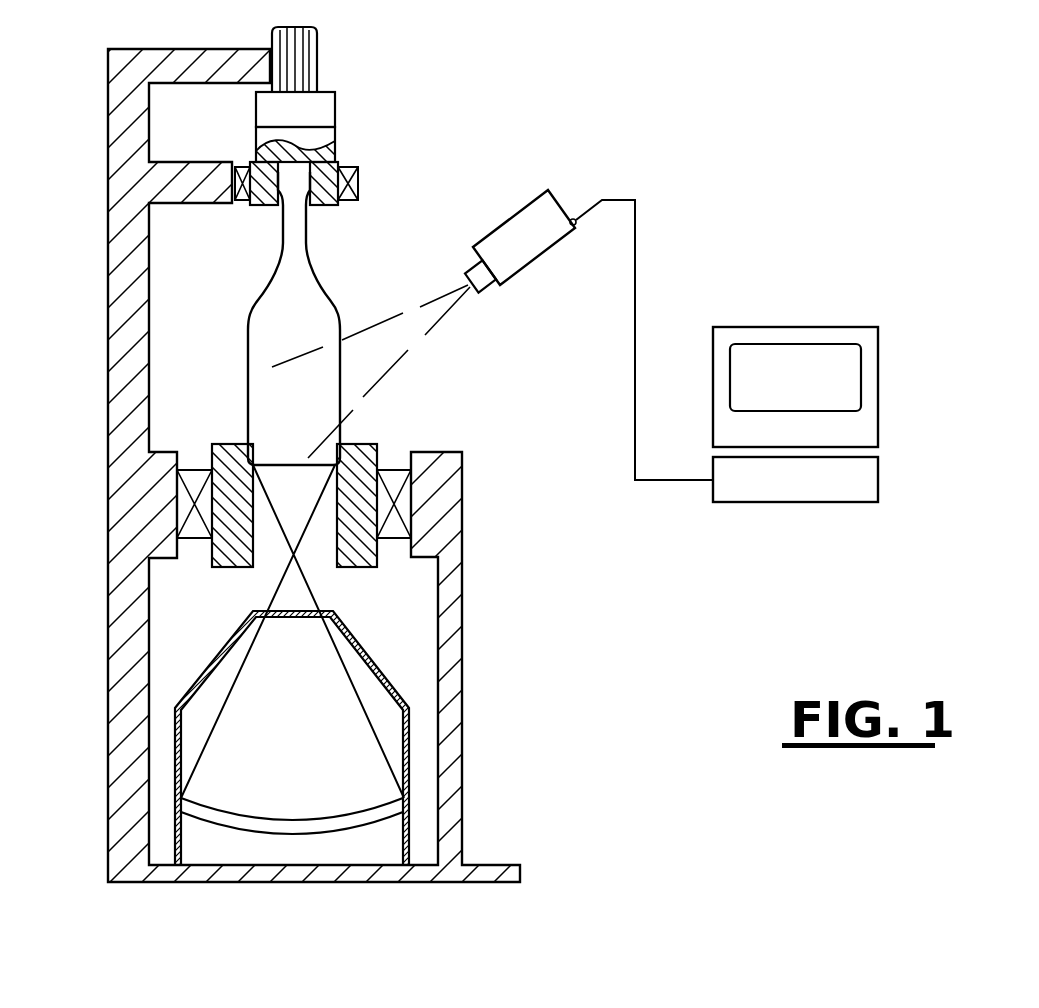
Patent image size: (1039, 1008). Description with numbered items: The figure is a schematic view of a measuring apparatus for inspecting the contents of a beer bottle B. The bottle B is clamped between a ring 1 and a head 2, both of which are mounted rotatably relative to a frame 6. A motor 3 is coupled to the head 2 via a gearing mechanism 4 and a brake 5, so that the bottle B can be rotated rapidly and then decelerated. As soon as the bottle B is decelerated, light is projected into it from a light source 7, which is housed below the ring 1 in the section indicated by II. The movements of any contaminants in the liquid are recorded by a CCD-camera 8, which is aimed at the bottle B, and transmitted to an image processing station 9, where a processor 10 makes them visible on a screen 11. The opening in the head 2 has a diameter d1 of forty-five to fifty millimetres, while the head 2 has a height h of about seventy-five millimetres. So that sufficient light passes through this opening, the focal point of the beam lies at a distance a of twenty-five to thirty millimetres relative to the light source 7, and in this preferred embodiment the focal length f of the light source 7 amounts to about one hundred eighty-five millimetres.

The ring 1 is at (365, 443).
The head 2 is at (326, 205).
The motor 3 is at (305, 38).
The gearing mechanism 4 is at (312, 100).
The brake 5 is at (315, 131).
The frame 6 is at (117, 165).
The light source 7 is at (333, 819).
The CCD-camera 8 is at (523, 222).
The image processing station 9 is at (862, 415).
The processor 10 is at (810, 492).
The screen 11 is at (820, 332).
The beer bottle B is at (328, 290).
The illumination housing II is at (395, 658).
The diameter of the head opening d1 is at (337, 502).
The height of the head h is at (354, 447).
The distance of the focal point a is at (258, 553).
The focal length f is at (266, 553).